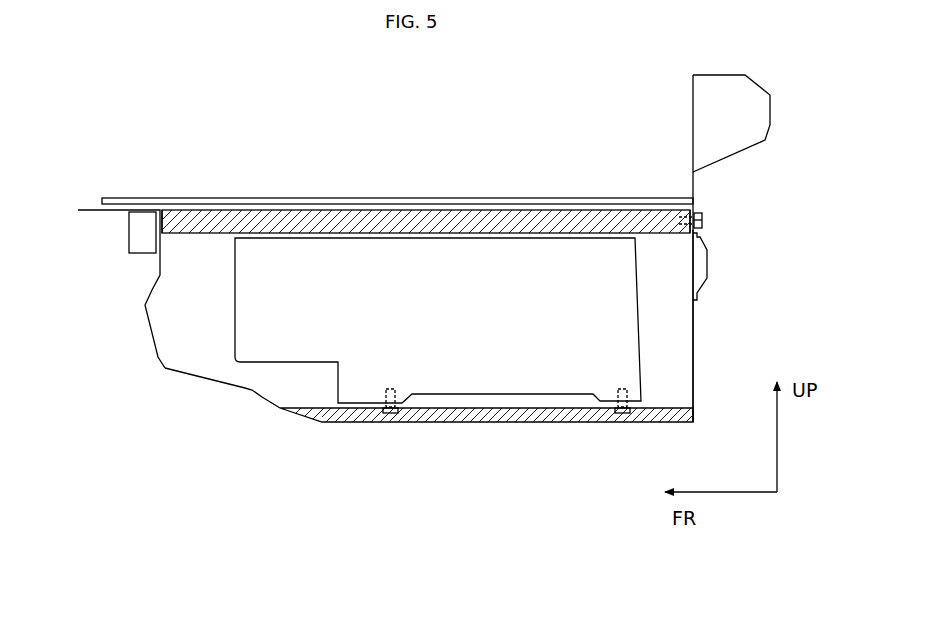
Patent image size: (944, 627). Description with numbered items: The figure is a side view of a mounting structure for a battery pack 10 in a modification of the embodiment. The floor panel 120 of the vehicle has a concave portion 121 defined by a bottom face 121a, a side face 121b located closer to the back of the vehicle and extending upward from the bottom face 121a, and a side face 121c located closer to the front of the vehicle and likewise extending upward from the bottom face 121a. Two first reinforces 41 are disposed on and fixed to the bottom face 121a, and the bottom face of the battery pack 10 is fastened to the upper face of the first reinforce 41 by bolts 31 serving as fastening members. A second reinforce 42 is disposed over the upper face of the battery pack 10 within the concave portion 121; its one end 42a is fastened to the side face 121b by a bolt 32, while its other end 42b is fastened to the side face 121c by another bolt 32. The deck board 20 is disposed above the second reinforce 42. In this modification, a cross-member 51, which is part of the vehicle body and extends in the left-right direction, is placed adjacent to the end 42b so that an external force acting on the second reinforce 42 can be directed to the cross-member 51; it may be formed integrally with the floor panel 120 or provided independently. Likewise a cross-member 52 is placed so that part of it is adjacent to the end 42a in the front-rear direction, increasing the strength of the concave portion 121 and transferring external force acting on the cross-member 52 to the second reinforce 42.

The battery pack 10 is at (233, 315).
The deck board 20 is at (318, 199).
The bolt 31 is at (390, 418).
The bolt 32 is at (705, 220).
The first reinforce 41 is at (557, 421).
The second reinforce 42 is at (364, 224).
The end of second reinforce 42a is at (673, 218).
The other end of second reinforce 42b is at (188, 224).
The cross-member 51 is at (144, 227).
The cross-member 52 is at (710, 262).
The floor panel 120 is at (86, 205).
The concave portion 121 is at (244, 392).
The bottom face 121a is at (487, 421).
The side face 121b is at (696, 348).
The side face 121c is at (147, 292).